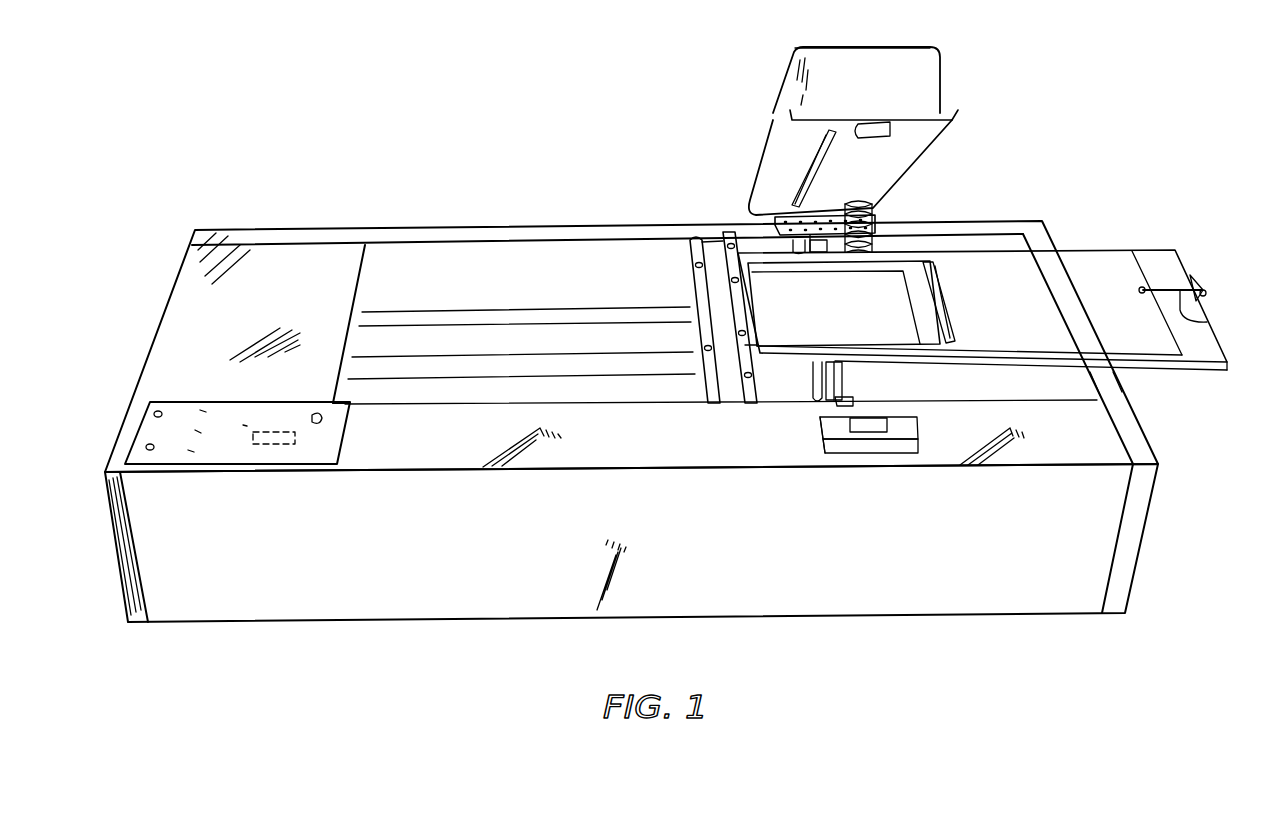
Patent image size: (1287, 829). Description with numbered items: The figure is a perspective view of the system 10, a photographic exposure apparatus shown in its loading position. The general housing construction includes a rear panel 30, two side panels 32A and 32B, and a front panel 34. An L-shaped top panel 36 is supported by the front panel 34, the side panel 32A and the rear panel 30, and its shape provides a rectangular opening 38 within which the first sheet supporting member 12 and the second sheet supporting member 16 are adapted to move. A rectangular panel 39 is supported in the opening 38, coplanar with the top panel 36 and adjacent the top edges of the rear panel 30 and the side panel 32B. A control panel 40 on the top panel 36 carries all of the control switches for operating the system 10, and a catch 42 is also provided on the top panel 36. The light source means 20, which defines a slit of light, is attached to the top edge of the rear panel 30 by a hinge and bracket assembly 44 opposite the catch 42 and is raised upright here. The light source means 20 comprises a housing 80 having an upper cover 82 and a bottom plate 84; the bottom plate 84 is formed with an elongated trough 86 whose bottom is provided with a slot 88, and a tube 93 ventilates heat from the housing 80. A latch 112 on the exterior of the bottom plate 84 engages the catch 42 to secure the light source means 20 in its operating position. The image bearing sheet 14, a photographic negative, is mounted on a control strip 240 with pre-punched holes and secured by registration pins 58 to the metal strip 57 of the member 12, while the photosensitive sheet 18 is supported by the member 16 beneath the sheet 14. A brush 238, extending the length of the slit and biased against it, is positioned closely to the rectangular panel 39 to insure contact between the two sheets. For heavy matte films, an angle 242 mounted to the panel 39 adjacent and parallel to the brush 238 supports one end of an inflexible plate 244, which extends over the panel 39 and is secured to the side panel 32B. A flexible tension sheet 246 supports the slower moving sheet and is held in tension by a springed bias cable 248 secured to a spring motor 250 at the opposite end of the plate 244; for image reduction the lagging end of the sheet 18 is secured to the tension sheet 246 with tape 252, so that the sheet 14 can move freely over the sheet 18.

The system 10 is at (514, 207).
The first sheet supporting member 12 is at (716, 236).
The image bearing sheet 14 is at (852, 311).
The second sheet supporting member 16 is at (684, 249).
The sheet of photosensitive material 18 is at (932, 311).
The light source means 20 is at (867, 141).
The rear panel 30 is at (319, 228).
The side panel 32A is at (120, 548).
The side panel 32B is at (1143, 541).
The front panel 34 is at (740, 522).
The top panel 36 is at (200, 318).
The rectangular opening 38 is at (540, 259).
The rectangular panel 39 is at (1075, 382).
The control panel 40 is at (297, 400).
The catch 42 is at (907, 425).
The hinge and bracket assembly 44 is at (818, 228).
The metal strip 57 is at (748, 350).
The registration pins 58 is at (728, 241).
The housing 80 is at (821, 50).
The upper cover 82 is at (882, 103).
The bottom plate 84 is at (892, 179).
The elongated trough 86 is at (813, 168).
The slot 88 is at (822, 153).
The tube 93 is at (873, 216).
The latch 112 is at (892, 128).
The brush 238 is at (813, 390).
The control strip 240 is at (738, 308).
The angle 242 is at (850, 384).
The inflexible plate 244 is at (1212, 349).
The flexible tension sheet 246 is at (1084, 318).
The springed bias cable 248 is at (1212, 322).
The spring motor 250 is at (1201, 284).
The tape 252 is at (948, 297).